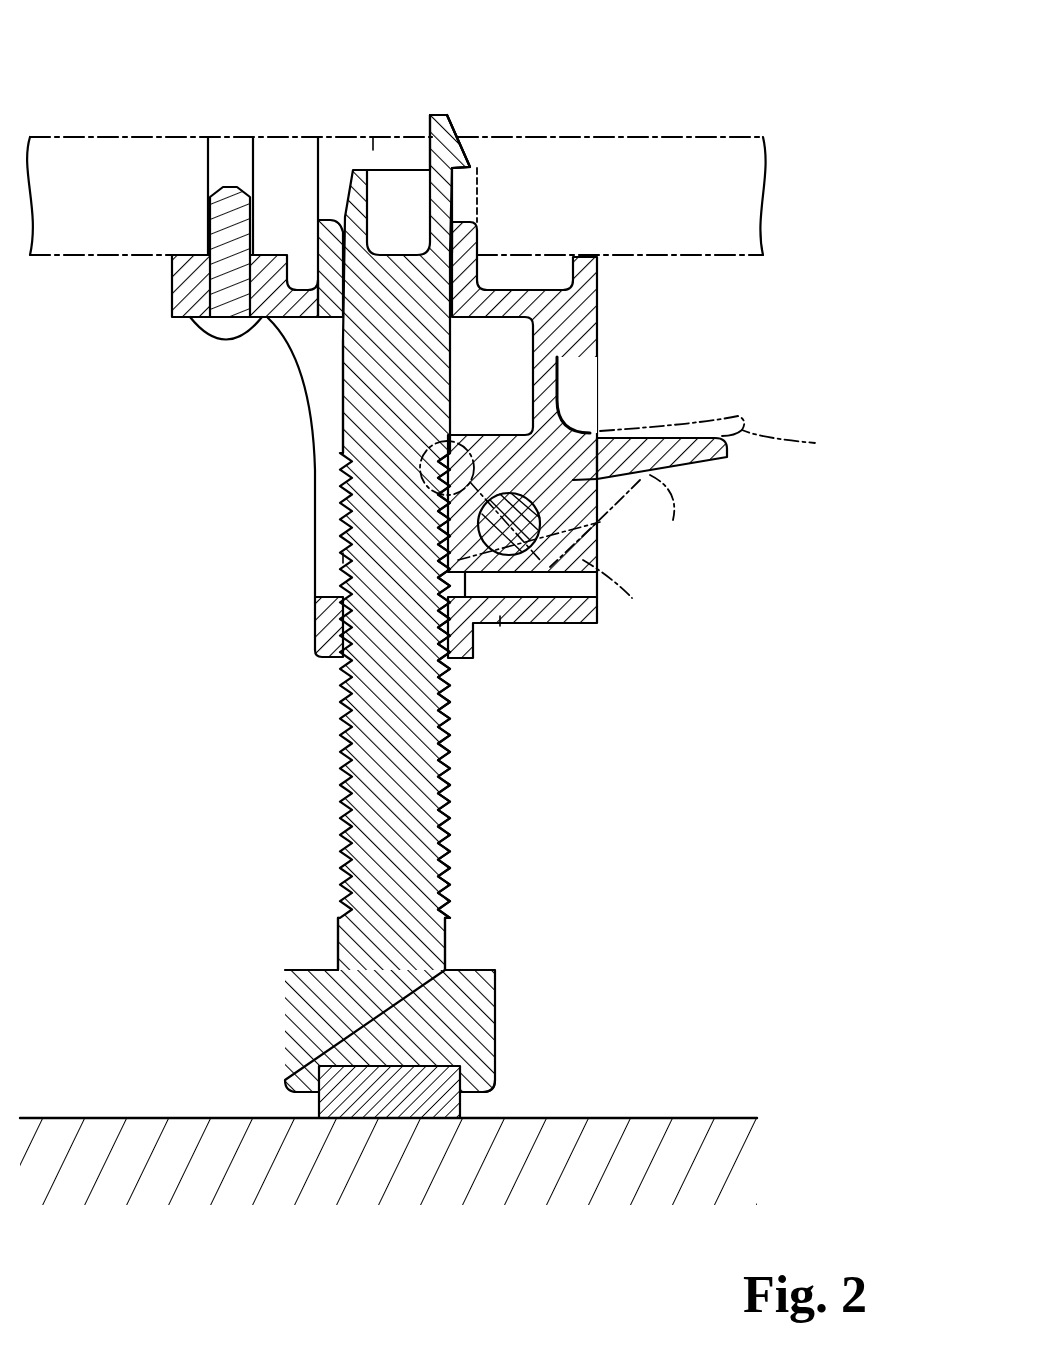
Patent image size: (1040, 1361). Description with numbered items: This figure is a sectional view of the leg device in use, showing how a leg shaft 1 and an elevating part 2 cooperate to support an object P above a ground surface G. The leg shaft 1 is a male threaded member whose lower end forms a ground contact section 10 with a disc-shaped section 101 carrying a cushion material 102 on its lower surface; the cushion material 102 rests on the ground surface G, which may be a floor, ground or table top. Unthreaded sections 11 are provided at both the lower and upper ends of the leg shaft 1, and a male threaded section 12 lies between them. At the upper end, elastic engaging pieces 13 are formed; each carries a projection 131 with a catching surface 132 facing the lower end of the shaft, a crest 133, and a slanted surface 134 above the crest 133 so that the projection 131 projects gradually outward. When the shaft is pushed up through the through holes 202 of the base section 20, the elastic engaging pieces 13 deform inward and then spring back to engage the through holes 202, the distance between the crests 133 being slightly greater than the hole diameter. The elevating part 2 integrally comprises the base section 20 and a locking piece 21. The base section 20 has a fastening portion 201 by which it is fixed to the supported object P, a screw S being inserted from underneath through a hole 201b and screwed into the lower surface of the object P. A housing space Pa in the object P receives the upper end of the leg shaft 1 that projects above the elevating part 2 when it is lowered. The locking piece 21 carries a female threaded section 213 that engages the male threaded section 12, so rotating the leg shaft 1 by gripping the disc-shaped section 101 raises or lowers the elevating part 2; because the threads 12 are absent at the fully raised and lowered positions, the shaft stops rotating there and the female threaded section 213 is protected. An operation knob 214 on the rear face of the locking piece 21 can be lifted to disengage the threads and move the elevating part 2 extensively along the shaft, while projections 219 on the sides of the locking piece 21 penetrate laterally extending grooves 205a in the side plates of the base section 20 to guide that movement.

The leg shaft 1 is at (395, 566).
The ground contact section 10 is at (480, 1025).
The disc-shaped section 101 is at (495, 1058).
The cushion material 102 is at (345, 1103).
The unthreaded section 11 is at (343, 395).
The male threaded section 12 is at (450, 748).
The elastic engaging piece 13 is at (343, 200).
The projection 131 is at (297, 207).
The catching surface 132 is at (457, 170).
The crest 133 is at (253, 213).
The slanted surface 134 is at (320, 207).
The elevating part 2 is at (315, 484).
The base section 20 is at (577, 454).
The fastening portion 201 is at (185, 280).
The hole 201b is at (188, 322).
The through hole 202 is at (485, 240).
The groove 205a is at (557, 375).
The locking piece 21 is at (573, 478).
The female threaded section 213 is at (343, 558).
The operation knob 214 is at (727, 462).
The projection 219 is at (555, 535).
The screw S is at (220, 267).
The supported object P is at (725, 163).
The housing space Pa is at (373, 150).
The ground surface G is at (700, 1118).